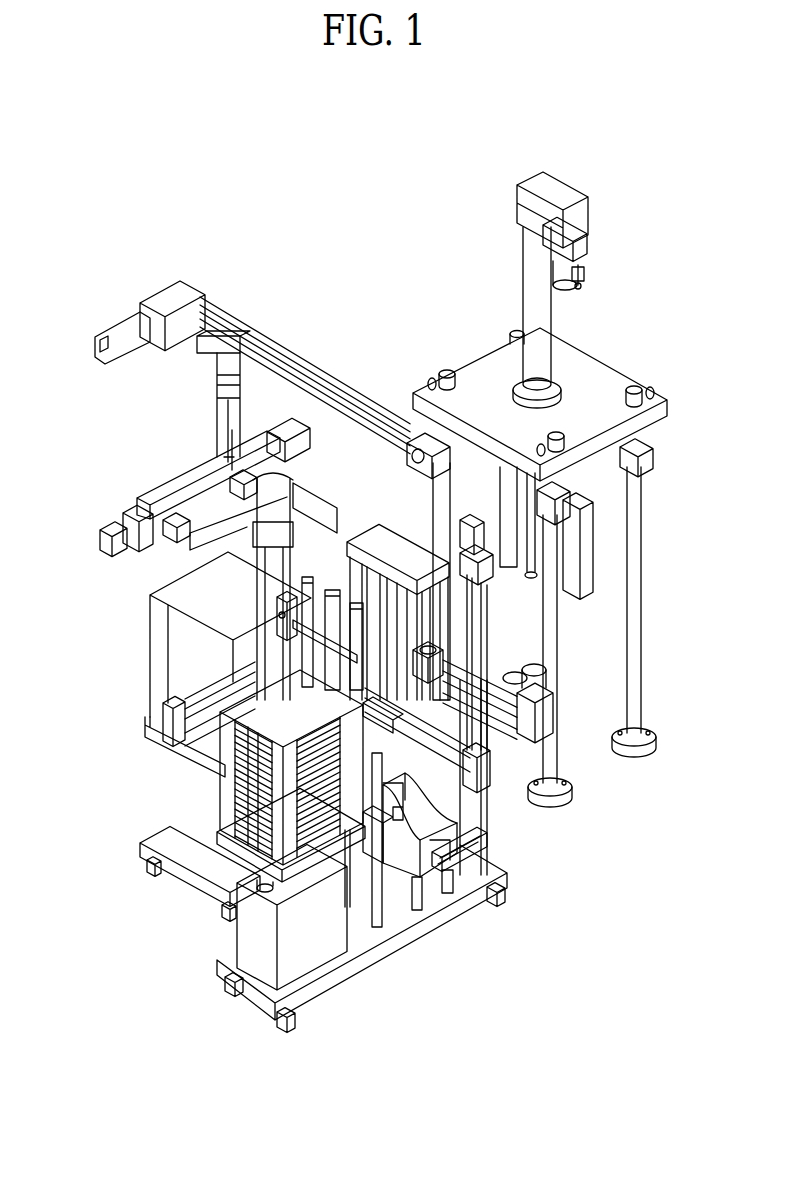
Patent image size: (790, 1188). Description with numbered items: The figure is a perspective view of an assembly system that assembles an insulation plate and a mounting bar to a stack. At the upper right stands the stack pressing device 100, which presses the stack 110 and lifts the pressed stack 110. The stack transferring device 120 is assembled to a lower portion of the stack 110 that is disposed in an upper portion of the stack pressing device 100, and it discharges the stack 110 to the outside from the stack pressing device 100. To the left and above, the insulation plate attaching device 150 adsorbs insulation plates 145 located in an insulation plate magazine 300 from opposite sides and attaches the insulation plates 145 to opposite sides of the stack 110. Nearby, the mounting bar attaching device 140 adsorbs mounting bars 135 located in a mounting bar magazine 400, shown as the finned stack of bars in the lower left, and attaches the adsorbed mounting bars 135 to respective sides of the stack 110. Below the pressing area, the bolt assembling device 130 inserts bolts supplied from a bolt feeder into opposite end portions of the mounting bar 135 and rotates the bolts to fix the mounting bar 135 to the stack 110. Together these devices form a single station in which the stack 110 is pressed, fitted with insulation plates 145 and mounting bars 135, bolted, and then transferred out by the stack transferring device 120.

The stack pressing device 100 is at (617, 368).
The stack 110 is at (597, 540).
The stack transferring device 120 is at (408, 703).
The bolt assembling device 130 is at (431, 825).
The mounting bar 135 is at (245, 707).
The mounting bar attaching device 140 is at (284, 648).
The insulation plate 145 is at (197, 592).
The insulation plate attaching device 150 is at (163, 483).
The insulation plate magazine 300 is at (188, 697).
The mounting bar magazine 400 is at (205, 812).